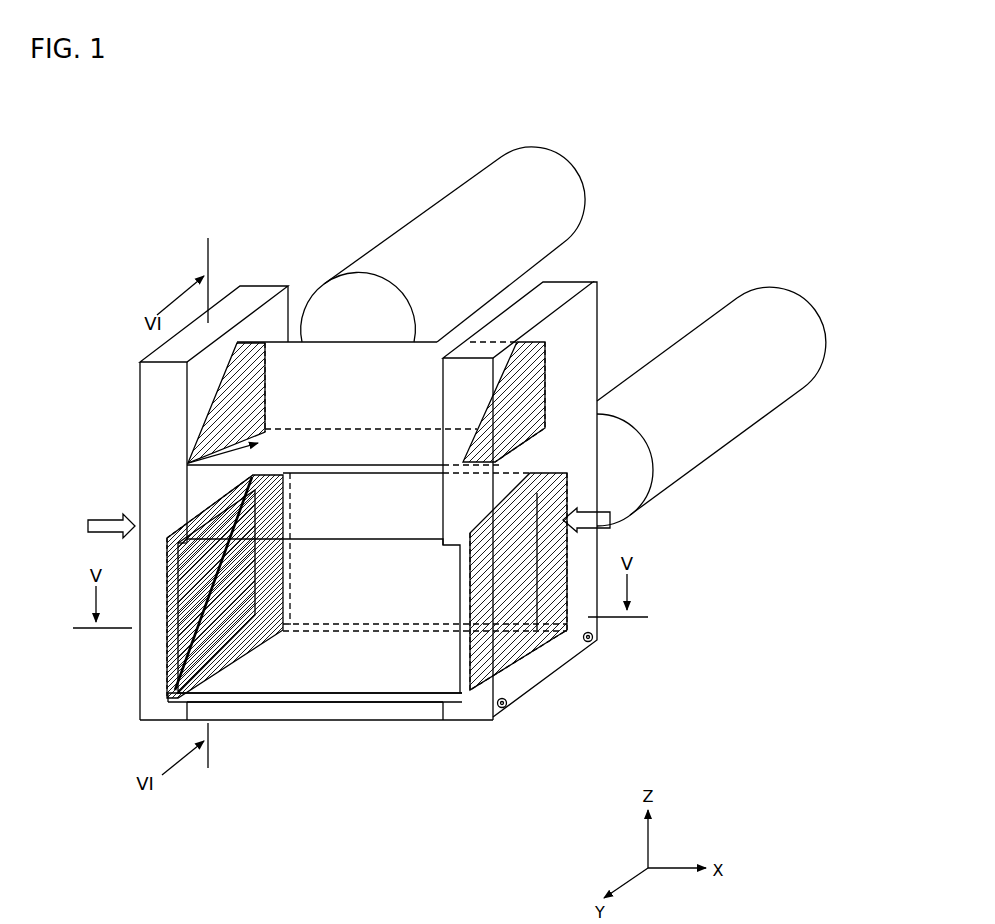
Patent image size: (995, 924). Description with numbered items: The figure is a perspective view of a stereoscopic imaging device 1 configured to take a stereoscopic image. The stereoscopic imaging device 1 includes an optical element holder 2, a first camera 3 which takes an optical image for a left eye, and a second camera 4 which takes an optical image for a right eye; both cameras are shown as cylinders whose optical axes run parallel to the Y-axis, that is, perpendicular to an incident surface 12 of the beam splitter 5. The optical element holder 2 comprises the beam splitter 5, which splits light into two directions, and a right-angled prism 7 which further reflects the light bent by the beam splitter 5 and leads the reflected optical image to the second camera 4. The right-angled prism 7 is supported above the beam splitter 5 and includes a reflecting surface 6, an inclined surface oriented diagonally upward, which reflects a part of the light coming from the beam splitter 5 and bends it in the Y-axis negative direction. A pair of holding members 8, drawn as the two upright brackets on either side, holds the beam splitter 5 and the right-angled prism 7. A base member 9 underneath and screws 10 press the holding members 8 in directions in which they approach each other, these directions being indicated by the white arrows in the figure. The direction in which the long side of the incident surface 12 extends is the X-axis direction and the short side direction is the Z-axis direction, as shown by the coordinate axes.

The stereoscopic imaging device 1 is at (665, 198).
The optical element holder 2 is at (647, 665).
The first camera 3 is at (765, 402).
The second camera 4 is at (570, 205).
The beam splitter 5 is at (308, 680).
The reflecting surface 6 is at (187, 467).
The right-angled prism 7 is at (297, 362).
The holding members 8 is at (252, 293).
The base member 9 is at (272, 708).
The screws 10 is at (580, 657).
The incident surface 12 is at (389, 668).